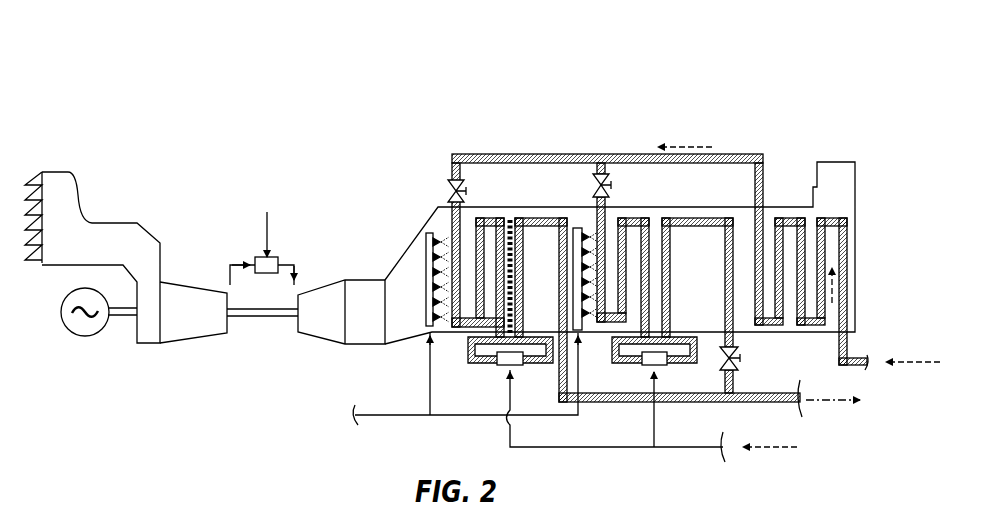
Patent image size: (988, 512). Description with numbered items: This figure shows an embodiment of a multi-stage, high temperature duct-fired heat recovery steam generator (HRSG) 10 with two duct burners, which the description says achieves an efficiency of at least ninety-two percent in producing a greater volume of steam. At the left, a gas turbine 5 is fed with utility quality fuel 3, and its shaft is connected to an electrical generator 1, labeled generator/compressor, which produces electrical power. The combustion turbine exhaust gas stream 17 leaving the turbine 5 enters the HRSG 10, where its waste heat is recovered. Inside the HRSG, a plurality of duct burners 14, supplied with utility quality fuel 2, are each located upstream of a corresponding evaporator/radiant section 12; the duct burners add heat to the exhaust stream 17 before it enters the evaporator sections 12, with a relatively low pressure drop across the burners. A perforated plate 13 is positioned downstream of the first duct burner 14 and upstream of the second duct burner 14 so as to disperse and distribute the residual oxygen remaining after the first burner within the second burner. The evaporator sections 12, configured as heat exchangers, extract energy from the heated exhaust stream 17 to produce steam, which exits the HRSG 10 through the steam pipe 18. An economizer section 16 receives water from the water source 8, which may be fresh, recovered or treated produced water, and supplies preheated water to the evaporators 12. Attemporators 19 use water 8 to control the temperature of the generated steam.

The generator/compressor 1 is at (188, 327).
The utility quality fuel 2 is at (430, 375).
The utility quality fuel 3 is at (267, 225).
The gas turbine 5 is at (336, 324).
The water source 8 is at (900, 332).
The heat recovery steam generator 10 is at (793, 52).
The evaporator/radiant section 12 is at (490, 218).
The perforated plate 13 is at (510, 220).
The duct burner 14 is at (427, 237).
The economizer section 16 is at (793, 218).
The exhaust gas stream 17 is at (408, 287).
The steam pipe 18 is at (897, 410).
The attemporator 19 is at (505, 365).